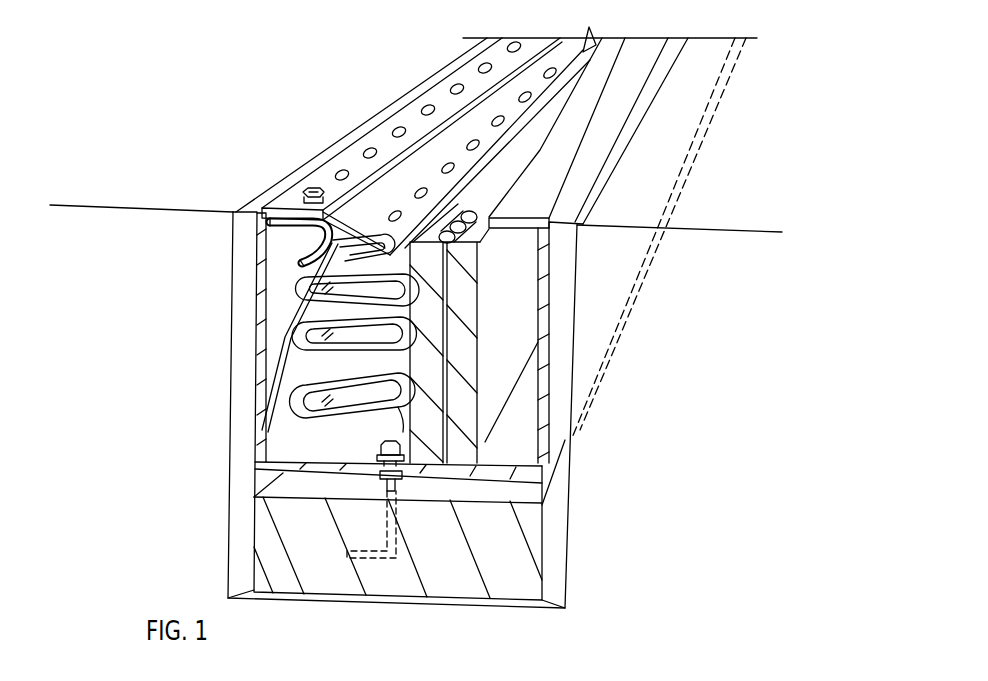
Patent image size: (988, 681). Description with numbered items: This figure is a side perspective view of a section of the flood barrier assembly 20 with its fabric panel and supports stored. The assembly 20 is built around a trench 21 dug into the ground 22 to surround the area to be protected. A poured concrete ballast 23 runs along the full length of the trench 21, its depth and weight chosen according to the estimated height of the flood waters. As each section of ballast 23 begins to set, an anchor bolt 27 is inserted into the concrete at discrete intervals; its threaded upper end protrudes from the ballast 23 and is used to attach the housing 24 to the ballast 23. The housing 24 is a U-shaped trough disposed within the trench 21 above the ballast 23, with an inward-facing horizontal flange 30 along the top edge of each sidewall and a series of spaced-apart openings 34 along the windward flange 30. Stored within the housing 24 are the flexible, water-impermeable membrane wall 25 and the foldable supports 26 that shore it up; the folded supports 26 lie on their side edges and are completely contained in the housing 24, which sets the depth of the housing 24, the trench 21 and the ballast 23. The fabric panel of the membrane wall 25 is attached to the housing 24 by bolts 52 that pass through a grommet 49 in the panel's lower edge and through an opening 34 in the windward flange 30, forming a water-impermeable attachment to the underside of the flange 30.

The flood barrier assembly 20 is at (318, 115).
The trench 21 is at (240, 481).
The ground 22 is at (97, 305).
The concrete ballast 23 is at (457, 573).
The housing 24 is at (257, 295).
The membrane wall 25 is at (310, 353).
The foldable supports 26 is at (488, 380).
The anchor bolt 27 is at (367, 556).
The horizontal flange 30 is at (530, 42).
The openings 34 is at (431, 105).
The grommet 49 is at (571, 47).
The bolts 52 is at (316, 188).